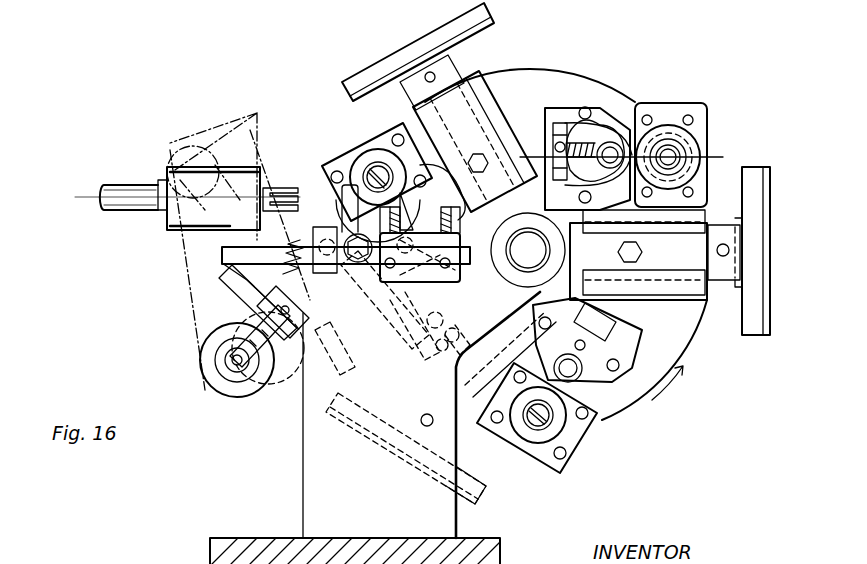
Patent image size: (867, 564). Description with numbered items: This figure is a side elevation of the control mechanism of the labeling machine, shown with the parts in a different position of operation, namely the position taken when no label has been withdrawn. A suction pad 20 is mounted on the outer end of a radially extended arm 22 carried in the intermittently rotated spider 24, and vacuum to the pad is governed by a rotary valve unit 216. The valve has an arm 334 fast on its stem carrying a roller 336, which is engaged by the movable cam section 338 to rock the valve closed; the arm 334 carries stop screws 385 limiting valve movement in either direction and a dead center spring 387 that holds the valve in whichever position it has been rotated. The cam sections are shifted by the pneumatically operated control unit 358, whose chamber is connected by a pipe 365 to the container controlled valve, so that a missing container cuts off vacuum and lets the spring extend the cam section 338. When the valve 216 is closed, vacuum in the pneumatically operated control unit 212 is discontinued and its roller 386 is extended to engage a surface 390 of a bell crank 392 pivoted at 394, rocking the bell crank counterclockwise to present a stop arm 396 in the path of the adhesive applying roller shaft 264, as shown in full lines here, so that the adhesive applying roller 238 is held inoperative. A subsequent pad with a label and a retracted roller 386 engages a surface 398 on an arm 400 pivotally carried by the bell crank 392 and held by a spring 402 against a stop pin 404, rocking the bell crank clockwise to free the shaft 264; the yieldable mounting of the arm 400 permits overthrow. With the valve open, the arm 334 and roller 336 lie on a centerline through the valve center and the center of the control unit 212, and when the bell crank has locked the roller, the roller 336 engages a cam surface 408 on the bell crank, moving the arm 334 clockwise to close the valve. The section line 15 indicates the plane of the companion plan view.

The section line 15 is at (86, 207).
The suction pad 20 is at (396, 40).
The radially extended arm 22 is at (458, 110).
The spider 24 is at (545, 70).
The pneumatically operated control unit 212 is at (688, 136).
The rotary valve unit 216 is at (619, 113).
The adhesive applying roller 238 is at (215, 378).
The adhesive applying roller shaft 264 is at (232, 360).
The arm 334 is at (625, 212).
The roller 336 is at (603, 153).
The cam section 338 is at (466, 192).
The pneumatically operated control unit 358 is at (195, 162).
The pipe 365 is at (140, 212).
The stop screws 385 is at (560, 125).
The roller 386 is at (372, 163).
The dead center spring 387 is at (622, 115).
The surface 390 is at (247, 257).
The bell crank 392 is at (415, 290).
The pivotal connection 394 is at (310, 188).
The stop arm 396 is at (235, 322).
The surface 398 is at (377, 333).
The arm 400 is at (258, 285).
The spring 402 is at (305, 228).
The stop pin 404 is at (262, 300).
The cam surface 408 is at (462, 312).